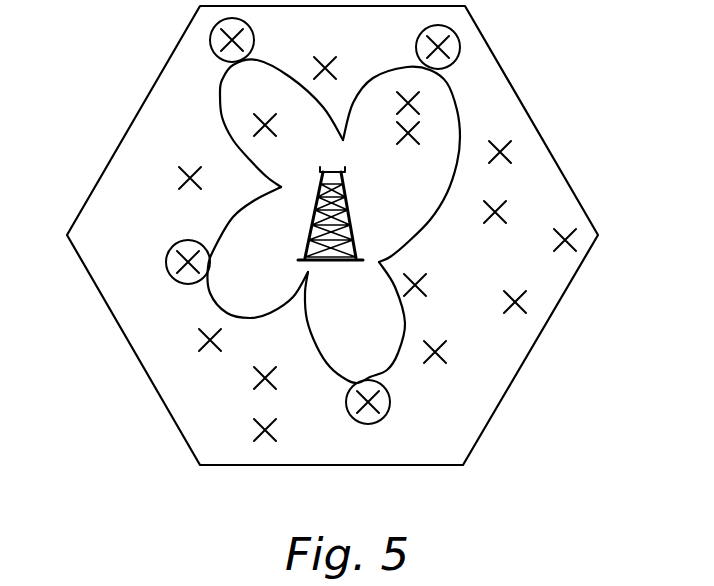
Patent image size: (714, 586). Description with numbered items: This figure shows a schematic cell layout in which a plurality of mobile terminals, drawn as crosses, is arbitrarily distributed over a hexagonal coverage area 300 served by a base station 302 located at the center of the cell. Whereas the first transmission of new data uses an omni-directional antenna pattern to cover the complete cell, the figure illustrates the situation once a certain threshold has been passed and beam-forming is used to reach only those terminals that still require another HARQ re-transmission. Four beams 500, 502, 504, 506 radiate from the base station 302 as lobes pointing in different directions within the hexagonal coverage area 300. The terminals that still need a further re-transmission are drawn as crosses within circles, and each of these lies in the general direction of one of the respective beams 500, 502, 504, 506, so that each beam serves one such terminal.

The hexagonal coverage area 300 is at (525, 108).
The base station 302 is at (343, 203).
The beam 500 is at (222, 88).
The beam 502 is at (447, 82).
The beam 504 is at (208, 295).
The beam 506 is at (390, 370).